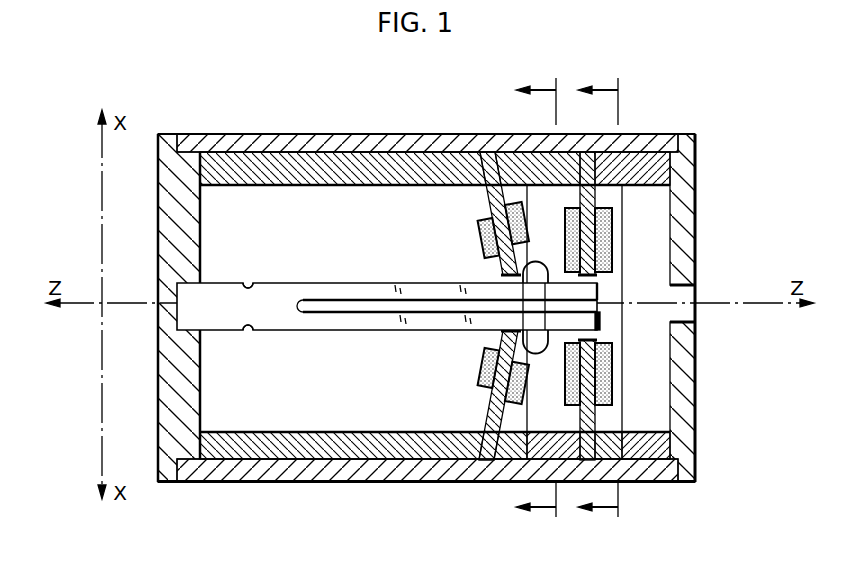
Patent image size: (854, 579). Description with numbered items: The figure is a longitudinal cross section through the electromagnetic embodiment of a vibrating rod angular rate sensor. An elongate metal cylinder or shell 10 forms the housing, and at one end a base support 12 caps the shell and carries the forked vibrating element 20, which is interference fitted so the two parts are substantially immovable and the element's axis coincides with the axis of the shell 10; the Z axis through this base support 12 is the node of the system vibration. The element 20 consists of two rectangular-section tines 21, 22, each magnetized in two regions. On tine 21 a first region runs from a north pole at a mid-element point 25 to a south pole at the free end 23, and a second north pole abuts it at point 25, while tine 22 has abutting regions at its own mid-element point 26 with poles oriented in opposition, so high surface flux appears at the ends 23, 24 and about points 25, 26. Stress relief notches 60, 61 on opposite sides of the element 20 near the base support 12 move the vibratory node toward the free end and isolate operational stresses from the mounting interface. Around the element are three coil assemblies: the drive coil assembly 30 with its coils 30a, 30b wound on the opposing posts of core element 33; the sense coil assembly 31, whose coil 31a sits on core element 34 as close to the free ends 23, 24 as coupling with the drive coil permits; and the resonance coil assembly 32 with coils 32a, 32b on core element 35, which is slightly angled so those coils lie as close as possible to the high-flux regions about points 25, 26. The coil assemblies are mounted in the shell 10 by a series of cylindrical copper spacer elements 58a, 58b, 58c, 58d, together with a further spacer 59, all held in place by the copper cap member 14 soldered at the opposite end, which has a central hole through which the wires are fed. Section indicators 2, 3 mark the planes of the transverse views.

The section line for FIG. 2 is at (598, 301).
The section line for FIG. 3 is at (536, 301).
The shell 10 is at (312, 482).
The base support 12 is at (168, 385).
The cap member 14 is at (688, 406).
The vibrating element 20 is at (419, 308).
The tine 21 is at (368, 283).
The tine 22 is at (372, 332).
The free end 23 is at (597, 288).
The free end 24 is at (600, 318).
The mid-element point 25 is at (528, 272).
The mid-element point 26 is at (531, 349).
The drive coil assembly 30 is at (606, 229).
The drive coil 30a is at (608, 210).
The drive coil 30b is at (612, 370).
The sense coil assembly 31 is at (500, 338).
The sense coil 31a is at (500, 276).
The resonance coil assembly 32 is at (470, 232).
The resonance coil 32a is at (478, 218).
The resonance coil 32b is at (480, 388).
The core element 33 is at (586, 153).
The core element 34 is at (513, 152).
The core element 35 is at (488, 158).
The spacer element 58a is at (380, 452).
The spacer element 58b is at (500, 462).
The spacer element 58c is at (541, 462).
The yoke segment 58d is at (612, 453).
The spacer 59 is at (657, 450).
The stress relief notch 60 is at (249, 333).
The stress relief notch 61 is at (245, 282).